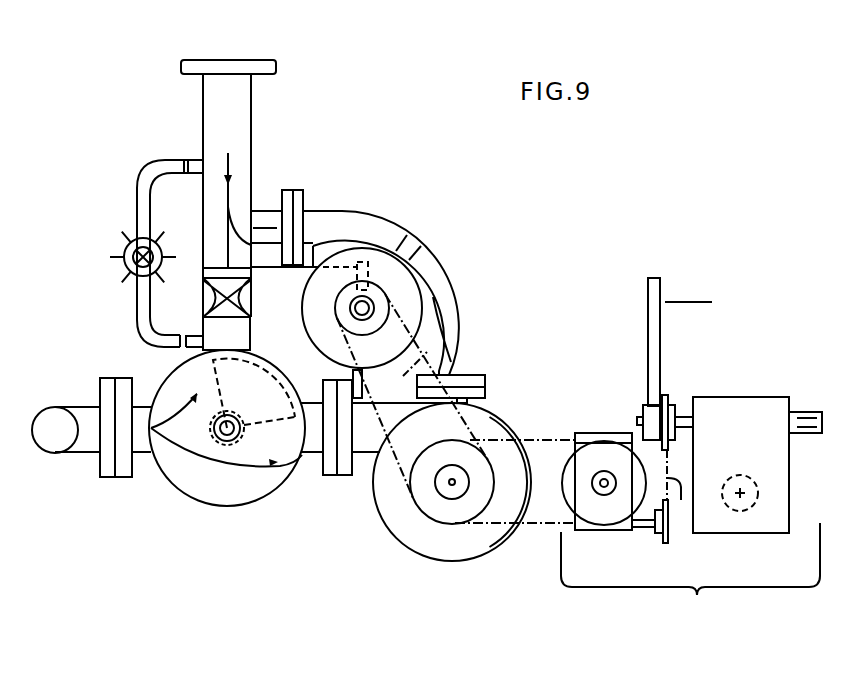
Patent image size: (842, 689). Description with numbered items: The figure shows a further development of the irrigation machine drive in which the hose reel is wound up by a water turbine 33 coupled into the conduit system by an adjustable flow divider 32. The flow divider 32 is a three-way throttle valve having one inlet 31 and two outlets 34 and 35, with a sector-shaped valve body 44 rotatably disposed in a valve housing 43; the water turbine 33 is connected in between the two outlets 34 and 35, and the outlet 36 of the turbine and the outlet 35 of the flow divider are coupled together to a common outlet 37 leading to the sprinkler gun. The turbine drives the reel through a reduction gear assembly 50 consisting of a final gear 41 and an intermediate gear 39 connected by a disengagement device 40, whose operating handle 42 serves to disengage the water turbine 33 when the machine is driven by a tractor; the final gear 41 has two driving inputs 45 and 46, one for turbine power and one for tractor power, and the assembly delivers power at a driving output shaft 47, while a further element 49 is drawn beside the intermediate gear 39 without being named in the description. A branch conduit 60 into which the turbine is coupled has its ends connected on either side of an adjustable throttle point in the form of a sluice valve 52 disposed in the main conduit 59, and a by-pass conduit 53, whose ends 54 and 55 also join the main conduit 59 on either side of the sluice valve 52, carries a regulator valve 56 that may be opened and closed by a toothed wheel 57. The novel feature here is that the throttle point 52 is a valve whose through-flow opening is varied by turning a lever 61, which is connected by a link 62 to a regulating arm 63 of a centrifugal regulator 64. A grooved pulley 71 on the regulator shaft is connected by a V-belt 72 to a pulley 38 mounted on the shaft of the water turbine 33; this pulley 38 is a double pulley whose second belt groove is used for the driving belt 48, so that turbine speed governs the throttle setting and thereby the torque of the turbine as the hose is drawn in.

The inlet 31 is at (58, 446).
The adjustable flow divider 32 is at (202, 500).
The water turbine 33 is at (498, 549).
The outlet 34 is at (310, 454).
The outlet 35 is at (250, 338).
The outlet of the water turbine 36 is at (487, 372).
The common outlet 37 is at (258, 61).
The pulley 38 is at (478, 452).
The intermediate gear 39 is at (633, 532).
The disengagement device 40 is at (641, 416).
The final gear 41 is at (752, 536).
The operating handle 42 is at (648, 328).
The valve housing 43 is at (169, 483).
The sector-shaped valve body 44 is at (283, 378).
The driving input 45 is at (684, 408).
The driving input 46 is at (805, 412).
The driving output shaft 47 is at (753, 488).
The driving belt 48 is at (543, 532).
The disc 49 is at (680, 500).
The reduction gear assembly 50 is at (690, 572).
The sluice valve 52 is at (252, 290).
The by-pass conduit 53 is at (137, 307).
The end of by-pass conduit 54 is at (184, 160).
The end of by-pass conduit 55 is at (191, 352).
The regulator valve 56 is at (128, 253).
The toothed wheel 57 is at (158, 233).
The main conduit 59 is at (243, 175).
The branch conduit 60 is at (436, 273).
The lever 61 is at (222, 292).
The link 62 is at (314, 246).
The regulating arm 63 is at (418, 236).
The centrifugal regulator 64 is at (425, 252).
The grooved pulley 71 is at (342, 310).
The V-belt 72 is at (405, 375).